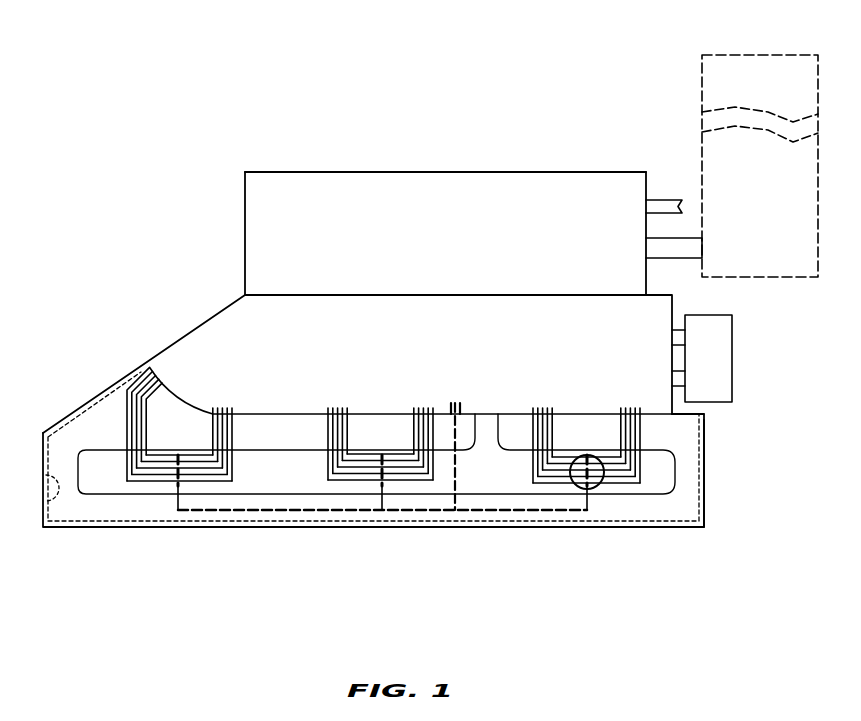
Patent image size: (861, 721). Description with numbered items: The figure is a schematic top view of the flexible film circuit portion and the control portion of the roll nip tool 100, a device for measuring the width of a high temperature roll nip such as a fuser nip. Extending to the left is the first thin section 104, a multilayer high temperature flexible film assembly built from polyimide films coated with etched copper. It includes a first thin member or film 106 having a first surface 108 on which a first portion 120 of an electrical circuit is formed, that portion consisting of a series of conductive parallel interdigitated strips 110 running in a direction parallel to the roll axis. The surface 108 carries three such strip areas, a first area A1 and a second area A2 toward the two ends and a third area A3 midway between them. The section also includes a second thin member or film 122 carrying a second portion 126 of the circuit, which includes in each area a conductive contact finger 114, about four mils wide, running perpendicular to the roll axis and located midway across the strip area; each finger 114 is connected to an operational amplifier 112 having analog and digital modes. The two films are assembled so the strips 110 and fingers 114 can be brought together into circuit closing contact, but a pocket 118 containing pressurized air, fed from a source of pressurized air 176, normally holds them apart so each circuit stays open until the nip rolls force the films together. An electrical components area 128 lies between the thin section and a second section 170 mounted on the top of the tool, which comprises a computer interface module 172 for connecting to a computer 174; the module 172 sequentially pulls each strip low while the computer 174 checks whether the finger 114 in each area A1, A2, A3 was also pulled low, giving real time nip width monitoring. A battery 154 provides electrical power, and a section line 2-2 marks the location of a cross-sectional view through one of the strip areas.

The roll nip tool 100 is at (214, 216).
The first thin section 104 is at (50, 418).
The first thin member or film 106 is at (705, 473).
The first surface 108 is at (84, 505).
The conductive parallel interdigitated strips 110 is at (203, 481).
The operational amplifier 112 is at (462, 403).
The conductive contact finger 114 is at (177, 503).
The pocket 118 is at (284, 497).
The first portion of the electrical circuit 120 is at (114, 420).
The second thin member or film 122 is at (45, 500).
The second portion of the electrical circuit 126 is at (508, 513).
The electrical components area 128 is at (661, 309).
The battery 154 is at (727, 360).
The second section 170 is at (418, 168).
The computer interface module 172 is at (513, 172).
The computer 174 is at (700, 98).
The source of pressurized air 176 is at (663, 205).
The section line 2-2 is at (595, 488).
The first strip area A1 is at (178, 425).
The second strip area A2 is at (597, 425).
The third strip area A3 is at (389, 425).